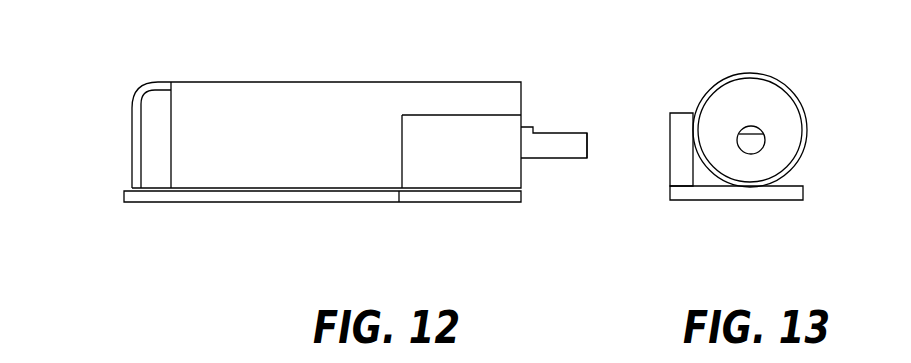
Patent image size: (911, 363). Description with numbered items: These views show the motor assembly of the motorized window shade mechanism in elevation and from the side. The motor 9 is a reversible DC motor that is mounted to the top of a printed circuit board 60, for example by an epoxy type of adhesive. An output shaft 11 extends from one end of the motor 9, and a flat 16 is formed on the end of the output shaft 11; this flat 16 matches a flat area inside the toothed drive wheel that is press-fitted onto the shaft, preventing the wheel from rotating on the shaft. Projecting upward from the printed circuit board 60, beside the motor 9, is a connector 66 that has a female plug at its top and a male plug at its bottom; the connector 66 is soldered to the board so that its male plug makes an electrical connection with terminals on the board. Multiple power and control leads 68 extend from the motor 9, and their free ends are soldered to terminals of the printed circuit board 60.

In FIG. 12, the motor 9 is at (388, 90).
In FIG. 13, the motor 9 is at (790, 92).
In FIG. 12, the output shaft 11 is at (589, 146).
In FIG. 13, the output shaft 11 is at (753, 143).
In FIG. 12, the flat 16 is at (563, 133).
In FIG. 12, the printed circuit board 60 is at (205, 204).
In FIG. 13, the printed circuit board 60 is at (783, 204).
In FIG. 12, the connector 66 is at (511, 176).
In FIG. 13, the connector 66 is at (677, 167).
In FIG. 12, the power and control leads 68 is at (132, 128).